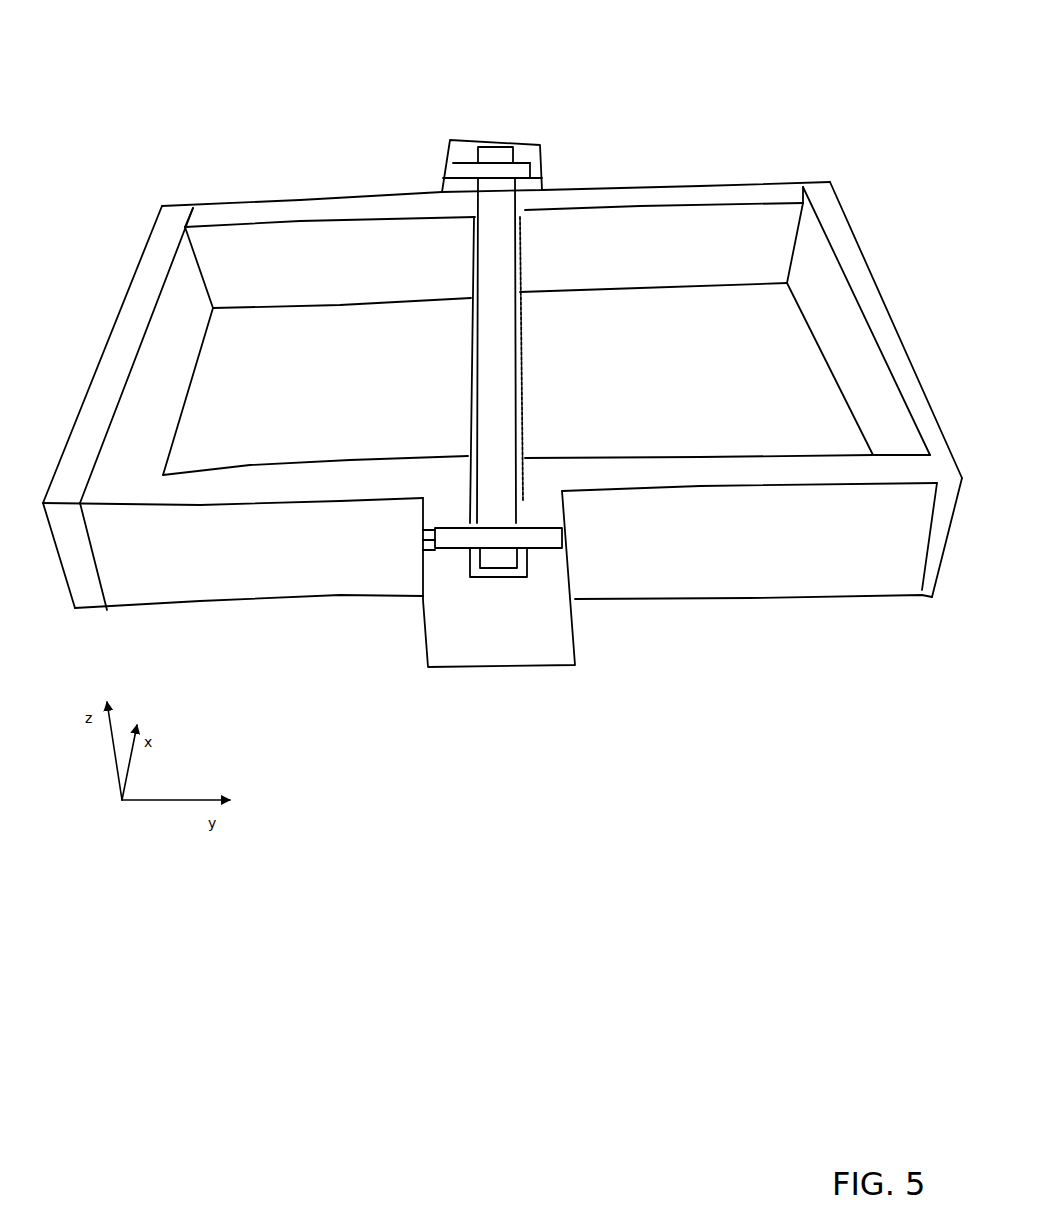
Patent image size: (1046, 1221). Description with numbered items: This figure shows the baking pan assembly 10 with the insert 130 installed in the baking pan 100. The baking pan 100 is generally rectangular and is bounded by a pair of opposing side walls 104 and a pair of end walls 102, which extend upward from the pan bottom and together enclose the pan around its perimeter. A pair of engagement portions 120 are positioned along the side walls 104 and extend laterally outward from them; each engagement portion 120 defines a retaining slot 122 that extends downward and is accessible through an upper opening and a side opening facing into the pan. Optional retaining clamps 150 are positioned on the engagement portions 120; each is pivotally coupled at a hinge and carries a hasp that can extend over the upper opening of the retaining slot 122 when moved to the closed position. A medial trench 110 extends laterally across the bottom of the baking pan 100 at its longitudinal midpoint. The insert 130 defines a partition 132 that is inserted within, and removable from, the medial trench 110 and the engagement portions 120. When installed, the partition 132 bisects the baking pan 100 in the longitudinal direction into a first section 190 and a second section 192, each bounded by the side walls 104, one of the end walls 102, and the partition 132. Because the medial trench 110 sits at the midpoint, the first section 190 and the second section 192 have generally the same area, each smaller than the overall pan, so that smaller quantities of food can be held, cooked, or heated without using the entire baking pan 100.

The baking pan assembly 10 is at (712, 670).
The baking pan 100 is at (660, 152).
The end walls 102 is at (122, 288).
The side walls 104 is at (745, 560).
The medial trench 110 is at (518, 418).
The engagement portions 120 is at (525, 147).
The retaining slot 122 is at (478, 140).
The insert 130 is at (495, 342).
The partition 132 is at (492, 388).
The retaining clamps 150 is at (458, 168).
The first section 190 is at (696, 370).
The second section 192 is at (317, 386).